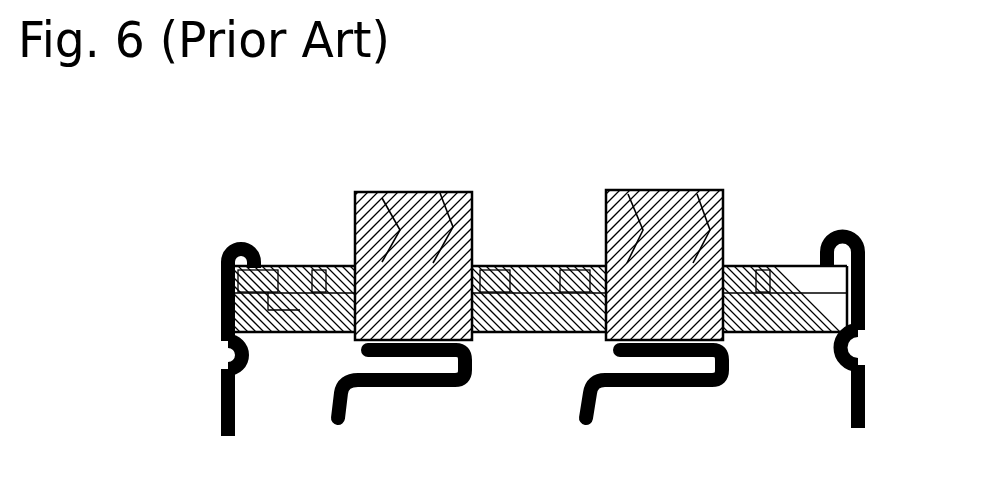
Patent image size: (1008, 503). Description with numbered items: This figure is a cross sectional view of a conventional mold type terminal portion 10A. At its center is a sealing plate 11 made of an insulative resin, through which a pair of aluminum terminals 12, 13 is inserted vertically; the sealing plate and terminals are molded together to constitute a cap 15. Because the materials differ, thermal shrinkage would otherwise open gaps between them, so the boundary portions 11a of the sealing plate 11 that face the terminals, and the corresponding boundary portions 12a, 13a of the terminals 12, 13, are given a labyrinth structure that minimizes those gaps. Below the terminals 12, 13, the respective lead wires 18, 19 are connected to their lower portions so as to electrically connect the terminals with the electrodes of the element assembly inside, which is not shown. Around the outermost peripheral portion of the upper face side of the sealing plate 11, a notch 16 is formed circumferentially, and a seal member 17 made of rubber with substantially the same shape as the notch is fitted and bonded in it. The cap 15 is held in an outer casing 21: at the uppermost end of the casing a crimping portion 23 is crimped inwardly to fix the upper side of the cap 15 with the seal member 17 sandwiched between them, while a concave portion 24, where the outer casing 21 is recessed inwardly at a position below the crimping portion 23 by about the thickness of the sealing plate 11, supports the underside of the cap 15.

The mold type terminal portion 10A is at (860, 165).
The sealing plate 11 is at (285, 266).
The boundary portions of the sealing plate 11a is at (324, 266).
The terminal 12 is at (413, 191).
The boundary portion of the terminal 12a is at (511, 266).
The terminal 13 is at (664, 189).
The boundary portion of the terminal 13a is at (574, 266).
The cap 15 is at (542, 262).
The notch 16 is at (220, 314).
The seal member 17 is at (220, 288).
The lead wire 18 is at (413, 388).
The lead wire 19 is at (665, 388).
The outer casing 21 is at (219, 404).
The crimping portion 23 is at (226, 240).
The concave portion 24 is at (222, 350).